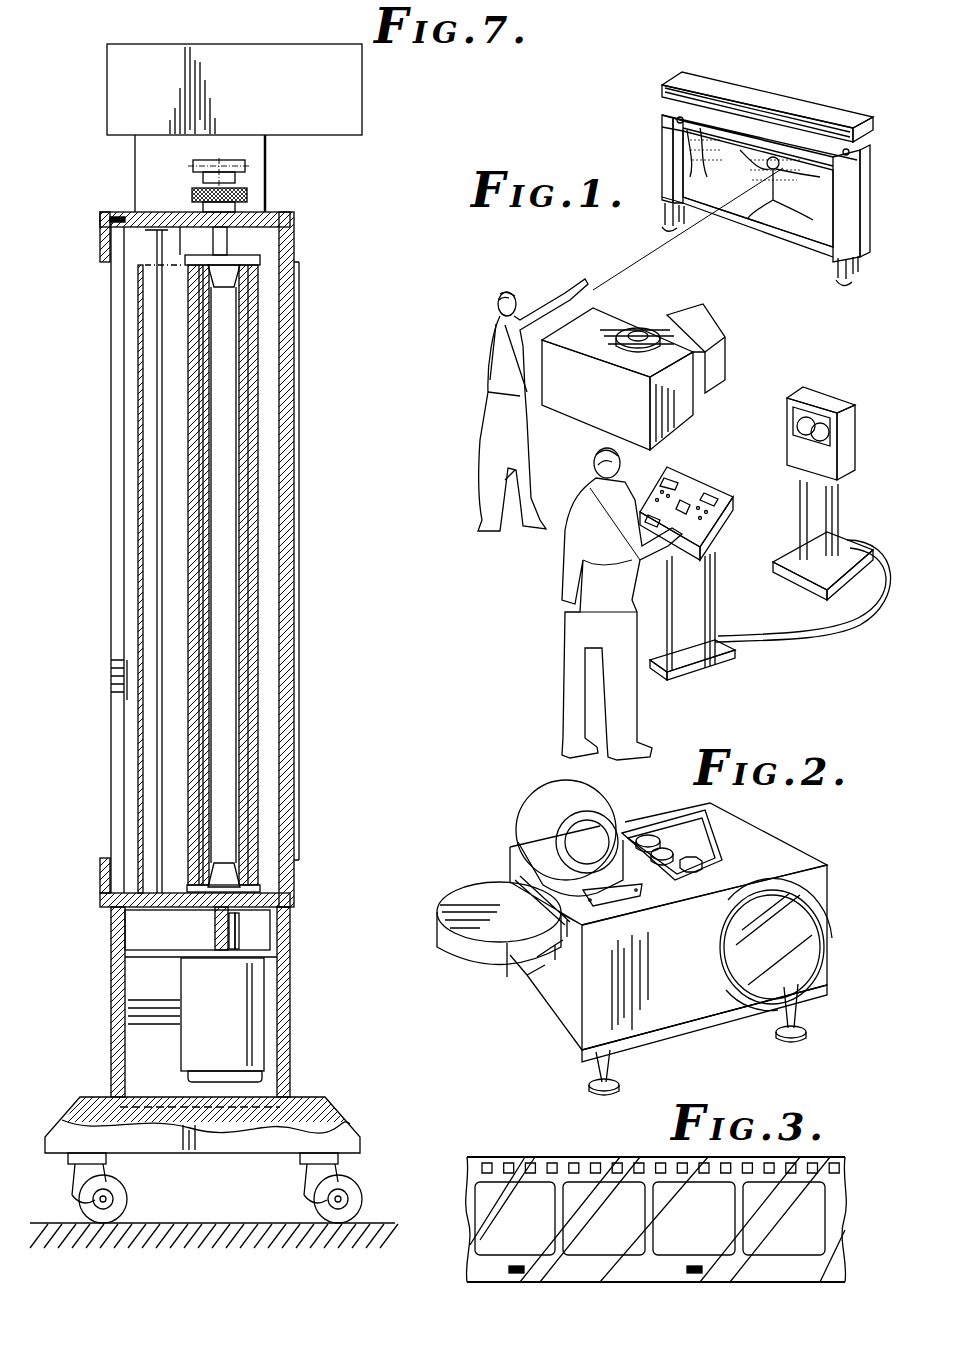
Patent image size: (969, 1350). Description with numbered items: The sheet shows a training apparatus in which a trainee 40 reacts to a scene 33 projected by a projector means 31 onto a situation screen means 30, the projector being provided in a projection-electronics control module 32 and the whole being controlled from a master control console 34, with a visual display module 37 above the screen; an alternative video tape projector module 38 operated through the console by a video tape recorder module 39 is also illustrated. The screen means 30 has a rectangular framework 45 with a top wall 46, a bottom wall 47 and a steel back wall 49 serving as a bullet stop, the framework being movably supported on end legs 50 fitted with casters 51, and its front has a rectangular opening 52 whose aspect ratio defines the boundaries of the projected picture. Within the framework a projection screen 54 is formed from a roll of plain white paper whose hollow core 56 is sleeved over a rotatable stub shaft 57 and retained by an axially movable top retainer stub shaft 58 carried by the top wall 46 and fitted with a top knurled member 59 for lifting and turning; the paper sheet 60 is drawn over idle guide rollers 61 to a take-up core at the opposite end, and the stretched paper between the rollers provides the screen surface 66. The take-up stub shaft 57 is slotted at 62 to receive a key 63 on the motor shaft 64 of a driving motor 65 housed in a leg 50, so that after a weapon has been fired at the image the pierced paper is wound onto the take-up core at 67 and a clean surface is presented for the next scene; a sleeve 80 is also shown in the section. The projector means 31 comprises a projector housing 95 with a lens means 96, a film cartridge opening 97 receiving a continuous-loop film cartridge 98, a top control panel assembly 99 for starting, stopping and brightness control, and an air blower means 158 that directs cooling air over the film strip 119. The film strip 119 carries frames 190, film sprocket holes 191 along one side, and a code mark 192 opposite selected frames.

In FIG. 7, the situation screen means 30 is at (332, 258).
In FIG. 1, the situation screen means 30 is at (640, 137).
In FIG. 1, the projector means 31 is at (634, 328).
In FIG. 2, the projector means 31 is at (557, 1036).
In FIG. 1, the projection-electronics control module 32 is at (678, 418).
In FIG. 1, the scene 33 is at (778, 222).
In FIG. 1, the master control console 34 is at (712, 488).
In FIG. 7, the visual display module 37 is at (234, 89).
In FIG. 1, the visual display module 37 is at (748, 98).
In FIG. 1, the video tape projector module 38 is at (718, 358).
In FIG. 1, the video tape recorder module 39 is at (815, 398).
In FIG. 1, the trainee 40 is at (480, 357).
In FIG. 7, the rectangular framework 45 is at (100, 240).
In FIG. 1, the rectangular framework 45 is at (860, 238).
In FIG. 7, the top wall 46 is at (252, 222).
In FIG. 7, the bottom wall 47 is at (290, 895).
In FIG. 7, the steel back wall 49 is at (289, 436).
In FIG. 7, the end leg 50 is at (111, 1012).
In FIG. 7, the caster 51 is at (128, 1200).
In FIG. 7, the rectangular opening 52 is at (105, 264).
In FIG. 1, the rectangular opening 52 is at (684, 165).
In FIG. 7, the projection screen 54 is at (140, 398).
In FIG. 7, the hollow core 56 is at (242, 502).
In FIG. 7, the rotatable stub shaft 57 is at (218, 864).
In FIG. 7, the top retainer stub shaft 58 is at (224, 288).
In FIG. 7, the top knurled member 59 is at (248, 192).
In FIG. 7, the paper sheet 60 is at (180, 227).
In FIG. 7, the idle guide roller 61 is at (152, 485).
In FIG. 7, the slot 62 is at (236, 932).
In FIG. 7, the key 63 is at (240, 946).
In FIG. 7, the motor shaft 64 is at (215, 930).
In FIG. 7, the driving motor 65 is at (227, 1032).
In FIG. 7, the screen surface 66 is at (137, 557).
In FIG. 7, the take-up location 67 is at (252, 560).
In FIG. 7, the sleeve 80 is at (299, 689).
In FIG. 2, the projector housing 95 is at (760, 841).
In FIG. 2, the lens means 96 is at (800, 896).
In FIG. 2, the film cartridge opening 97 is at (538, 958).
In FIG. 2, the film cartridge 98 is at (455, 946).
In FIG. 2, the top control panel assembly 99 is at (660, 830).
In FIG. 2, the air blower means 158 is at (522, 817).
In FIG. 3, the film strip 119 is at (522, 1149).
In FIG. 3, the frame 190 is at (651, 1218).
In FIG. 3, the film sprocket hole 191 is at (593, 1162).
In FIG. 3, the code mark 192 is at (516, 1274).